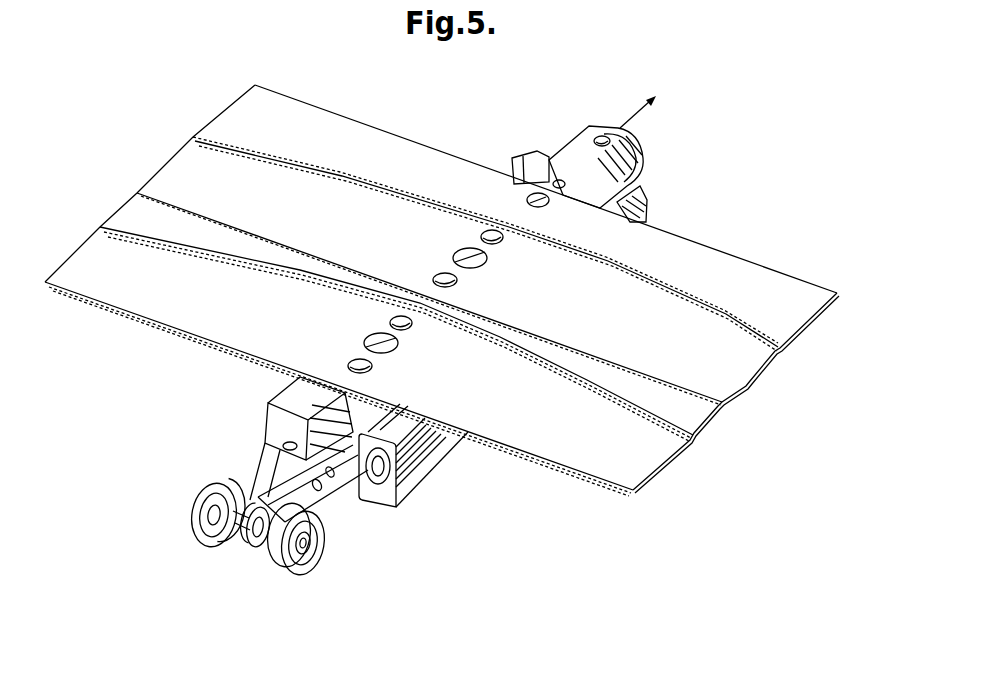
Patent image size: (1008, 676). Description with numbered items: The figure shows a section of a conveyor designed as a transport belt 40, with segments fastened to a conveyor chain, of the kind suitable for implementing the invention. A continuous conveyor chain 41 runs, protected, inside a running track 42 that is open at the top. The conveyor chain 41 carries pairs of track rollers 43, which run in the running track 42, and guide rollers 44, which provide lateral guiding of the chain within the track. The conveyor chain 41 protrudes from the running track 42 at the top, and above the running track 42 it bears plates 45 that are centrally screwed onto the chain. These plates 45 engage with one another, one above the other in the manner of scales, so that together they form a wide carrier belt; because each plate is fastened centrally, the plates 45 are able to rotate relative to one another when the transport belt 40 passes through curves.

The transport belt 40 is at (442, 377).
The conveyor chain 41 is at (324, 497).
The running track 42 is at (404, 474).
The track rollers 43 is at (225, 562).
The guide rollers 44 is at (641, 156).
The plates 45 is at (192, 173).